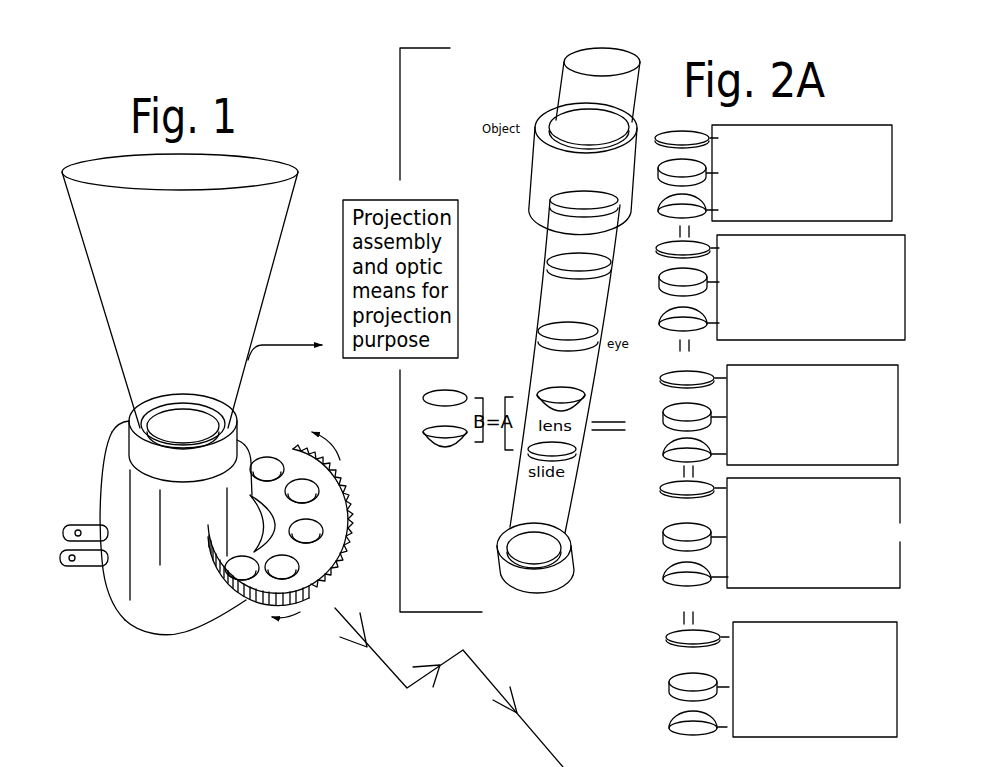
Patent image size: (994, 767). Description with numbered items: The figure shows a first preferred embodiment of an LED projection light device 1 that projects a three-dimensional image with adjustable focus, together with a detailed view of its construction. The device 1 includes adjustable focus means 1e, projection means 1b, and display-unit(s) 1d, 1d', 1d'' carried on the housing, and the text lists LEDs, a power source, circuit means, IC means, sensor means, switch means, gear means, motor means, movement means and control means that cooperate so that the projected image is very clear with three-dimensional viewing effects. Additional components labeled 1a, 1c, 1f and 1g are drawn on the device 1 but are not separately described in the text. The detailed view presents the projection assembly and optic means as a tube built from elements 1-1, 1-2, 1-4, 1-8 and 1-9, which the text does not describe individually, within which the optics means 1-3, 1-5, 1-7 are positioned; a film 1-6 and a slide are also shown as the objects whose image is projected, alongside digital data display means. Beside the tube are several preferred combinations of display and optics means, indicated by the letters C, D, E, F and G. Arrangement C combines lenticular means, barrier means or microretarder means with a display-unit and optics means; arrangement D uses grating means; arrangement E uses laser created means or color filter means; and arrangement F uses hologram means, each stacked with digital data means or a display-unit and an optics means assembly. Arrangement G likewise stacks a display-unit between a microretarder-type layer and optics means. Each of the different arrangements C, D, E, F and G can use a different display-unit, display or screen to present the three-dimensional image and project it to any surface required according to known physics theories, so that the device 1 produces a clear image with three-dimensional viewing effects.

In FIG. 1, the LED projection light device 1 is at (110, 466).
In FIG. 1, the power plug 1a is at (92, 565).
In FIG. 1, the projection means 1b is at (143, 612).
In FIG. 1, the gear teeth of rotating wheel 1c is at (247, 592).
In FIG. 1, the display-unit 1d is at (266, 560).
In FIG. 1, the display-unit 1d' is at (322, 570).
In FIG. 1, the display-unit 1d'' is at (332, 480).
In FIG. 1, the adjustable focus means 1e is at (155, 430).
In FIG. 1, the rotating slide wheel 1f is at (244, 458).
In FIG. 1, the projection light cone 1g is at (290, 172).
In FIG. 2A, the projection assembly tube 1-1 is at (537, 206).
In FIG. 2A, the tube upper section 1-2 is at (551, 173).
In FIG. 2A, the optics means 1-3 is at (542, 332).
In FIG. 2A, the lens ring 1-4 is at (567, 126).
In FIG. 2A, the optics means 1-5 is at (574, 62).
In FIG. 2A, the film 1-6 is at (447, 392).
In FIG. 2A, the optics means 1-7 is at (436, 443).
In FIG. 2A, the end ring 1-8 is at (548, 558).
In FIG. 2A, the tube end cap 1-9 is at (556, 575).
In FIG. 2A, the preferred arrangement G is at (655, 138).
In FIG. 2A, the hologram means arrangement F is at (655, 247).
In FIG. 2A, the lenticular, barrier and microretarder means arrangement C is at (655, 377).
In FIG. 2A, the grating means arrangement D is at (655, 487).
In FIG. 2A, the color filter means arrangement E is at (653, 635).